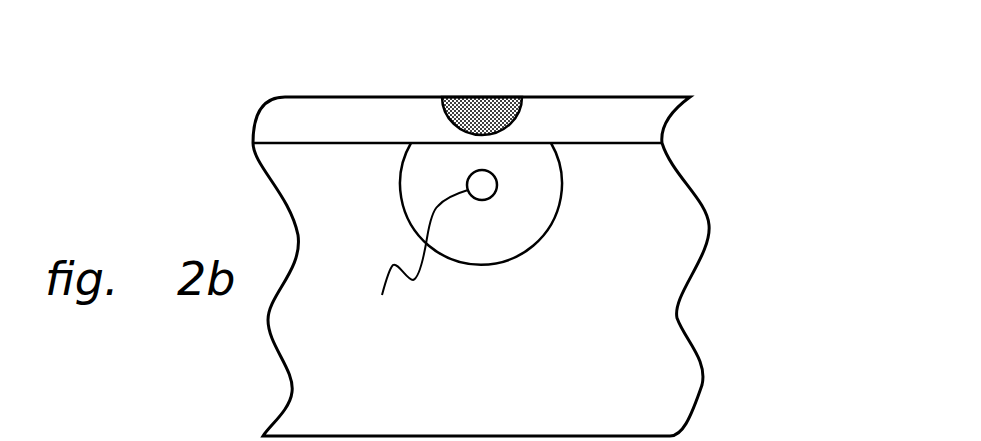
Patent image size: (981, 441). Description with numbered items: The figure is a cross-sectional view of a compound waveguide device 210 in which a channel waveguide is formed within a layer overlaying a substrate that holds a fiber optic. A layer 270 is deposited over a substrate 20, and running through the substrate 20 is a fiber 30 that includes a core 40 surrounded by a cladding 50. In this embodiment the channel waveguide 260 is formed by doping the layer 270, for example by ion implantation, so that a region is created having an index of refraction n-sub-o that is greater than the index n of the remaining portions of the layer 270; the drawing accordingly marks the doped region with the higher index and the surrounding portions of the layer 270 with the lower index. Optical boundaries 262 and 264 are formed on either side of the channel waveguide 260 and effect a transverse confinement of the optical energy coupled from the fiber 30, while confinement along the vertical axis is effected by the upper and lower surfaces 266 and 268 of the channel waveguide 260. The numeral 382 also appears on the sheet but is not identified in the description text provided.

The substrate 20 is at (481, 266).
The fiber 30 is at (553, 225).
The core 40 is at (413, 258).
The cladding 50 is at (476, 228).
The compound waveguide device 210 is at (216, 166).
The channel waveguide 260 is at (468, 136).
The optical boundary 262 is at (430, 115).
The optical boundary 264 is at (532, 115).
The surface 266 is at (505, 88).
The surface 268 is at (490, 140).
The layer 270 is at (692, 126).
The reference numeral 382 is at (150, 421).